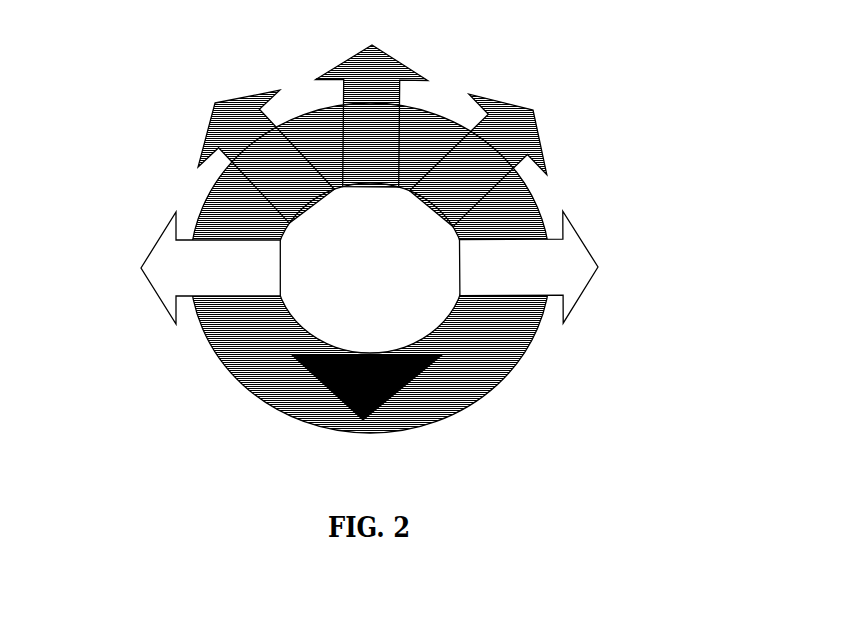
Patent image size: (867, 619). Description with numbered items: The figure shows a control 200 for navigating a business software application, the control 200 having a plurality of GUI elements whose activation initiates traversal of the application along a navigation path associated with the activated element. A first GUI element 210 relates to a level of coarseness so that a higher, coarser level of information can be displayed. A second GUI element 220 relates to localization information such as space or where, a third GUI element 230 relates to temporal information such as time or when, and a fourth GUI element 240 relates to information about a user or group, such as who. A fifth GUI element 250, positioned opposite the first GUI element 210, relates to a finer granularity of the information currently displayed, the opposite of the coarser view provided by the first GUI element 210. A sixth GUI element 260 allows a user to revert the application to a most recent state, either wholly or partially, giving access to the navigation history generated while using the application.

The control 200 is at (230, 378).
The first GUI element 210 is at (153, 295).
The second GUI element 220 is at (202, 138).
The third GUI element 230 is at (350, 70).
The fourth GUI element 240 is at (485, 97).
The fifth GUI element 250 is at (572, 223).
The sixth GUI element 260 is at (407, 383).